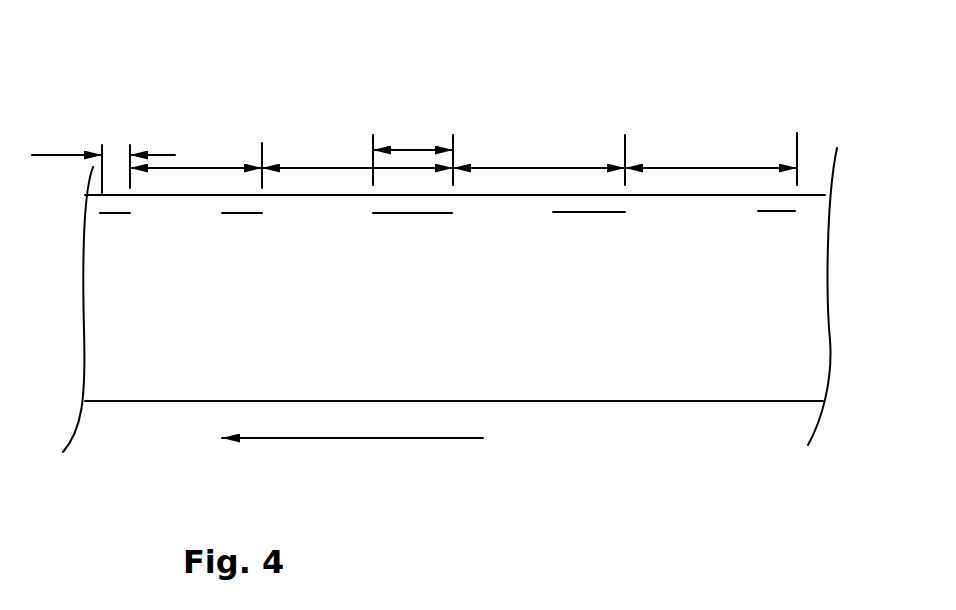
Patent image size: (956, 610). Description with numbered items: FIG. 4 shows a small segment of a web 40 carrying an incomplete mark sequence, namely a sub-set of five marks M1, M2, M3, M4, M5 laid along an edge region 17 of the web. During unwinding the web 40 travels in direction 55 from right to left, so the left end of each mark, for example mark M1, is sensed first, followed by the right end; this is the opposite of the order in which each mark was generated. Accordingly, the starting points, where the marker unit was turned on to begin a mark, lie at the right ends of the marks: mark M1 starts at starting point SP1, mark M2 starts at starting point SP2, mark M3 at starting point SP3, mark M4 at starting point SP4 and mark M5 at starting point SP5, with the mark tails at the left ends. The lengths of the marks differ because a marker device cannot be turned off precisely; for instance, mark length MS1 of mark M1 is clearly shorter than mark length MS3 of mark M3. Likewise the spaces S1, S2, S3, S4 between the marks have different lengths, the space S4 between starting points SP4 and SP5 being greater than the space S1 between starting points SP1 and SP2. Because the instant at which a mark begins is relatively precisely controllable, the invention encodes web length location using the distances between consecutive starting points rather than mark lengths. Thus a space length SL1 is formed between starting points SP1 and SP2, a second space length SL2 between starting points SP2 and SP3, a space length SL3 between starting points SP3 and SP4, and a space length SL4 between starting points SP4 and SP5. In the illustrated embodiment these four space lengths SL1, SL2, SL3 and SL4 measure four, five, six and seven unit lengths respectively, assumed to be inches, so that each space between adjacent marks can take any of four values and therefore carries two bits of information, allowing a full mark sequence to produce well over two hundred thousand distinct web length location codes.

The mark length MS1 is at (65, 155).
The space length SL1 is at (186, 168).
The second space length SL2 is at (305, 168).
The mark length MS3 is at (405, 150).
The space length SL3 is at (520, 168).
The space length SL4 is at (660, 168).
The strip edge / tape 17 is at (602, 195).
The web 40 is at (651, 370).
The mark M1 is at (120, 215).
The mark M2 is at (228, 215).
The mark M3 is at (410, 215).
The mark M4 is at (603, 214).
The mark M5 is at (777, 213).
The starting point SP1 is at (131, 215).
The starting point SP2 is at (258, 215).
The starting point SP3 is at (452, 215).
The starting point SP4 is at (633, 215).
The starting point SP5 is at (808, 220).
The space S1 is at (181, 228).
The space S2 is at (313, 216).
The space S3 is at (480, 222).
The space S4 is at (697, 212).
The direction 55 is at (352, 453).